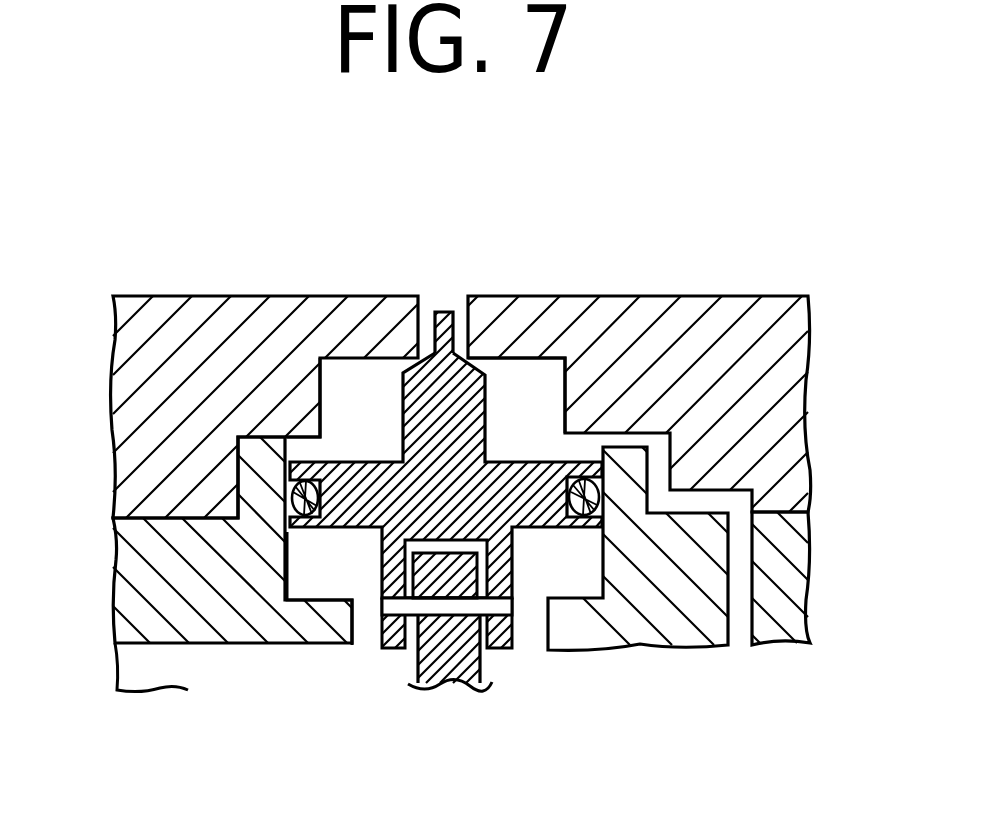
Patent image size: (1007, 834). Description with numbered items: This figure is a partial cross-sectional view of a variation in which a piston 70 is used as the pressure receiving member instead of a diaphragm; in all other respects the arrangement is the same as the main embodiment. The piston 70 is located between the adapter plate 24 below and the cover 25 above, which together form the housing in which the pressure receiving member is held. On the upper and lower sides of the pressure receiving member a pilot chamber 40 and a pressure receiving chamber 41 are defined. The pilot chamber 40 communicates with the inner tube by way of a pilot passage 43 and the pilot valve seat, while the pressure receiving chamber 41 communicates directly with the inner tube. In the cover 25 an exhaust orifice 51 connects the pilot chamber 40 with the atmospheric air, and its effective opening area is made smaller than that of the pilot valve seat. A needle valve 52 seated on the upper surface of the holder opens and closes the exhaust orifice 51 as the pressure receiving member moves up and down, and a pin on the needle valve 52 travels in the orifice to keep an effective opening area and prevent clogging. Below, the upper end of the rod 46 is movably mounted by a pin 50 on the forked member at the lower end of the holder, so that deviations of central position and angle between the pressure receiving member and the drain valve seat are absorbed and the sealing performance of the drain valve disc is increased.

The adapter plate 24 is at (157, 562).
The cover 25 is at (189, 310).
The pilot chamber 40 is at (527, 375).
The pressure receiving chamber 41 is at (298, 578).
The pilot passage 43 is at (707, 497).
The rod 46 is at (480, 657).
The pin 50 is at (405, 608).
The exhaust orifice 51 is at (423, 313).
The needle valve 52 is at (447, 400).
The piston 70 is at (383, 428).